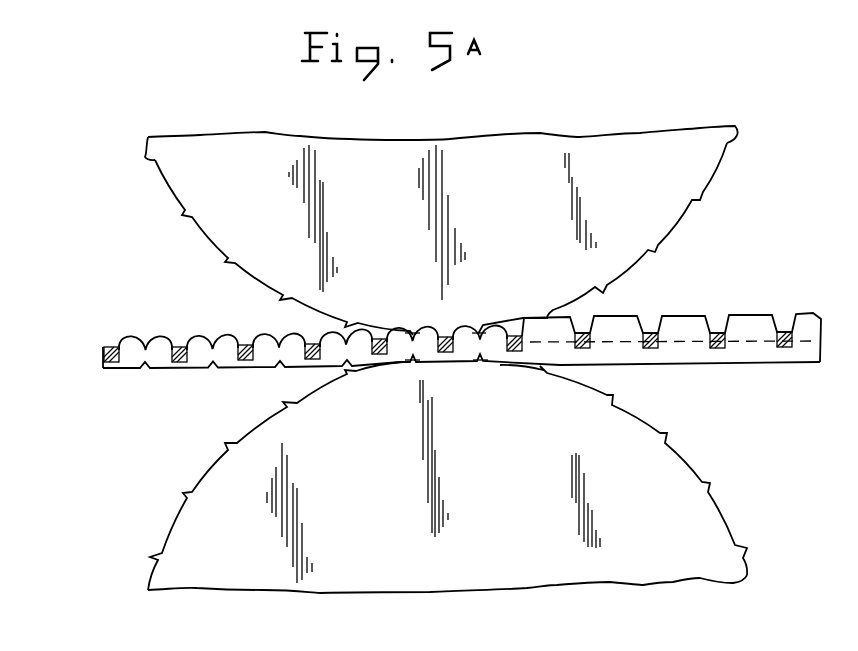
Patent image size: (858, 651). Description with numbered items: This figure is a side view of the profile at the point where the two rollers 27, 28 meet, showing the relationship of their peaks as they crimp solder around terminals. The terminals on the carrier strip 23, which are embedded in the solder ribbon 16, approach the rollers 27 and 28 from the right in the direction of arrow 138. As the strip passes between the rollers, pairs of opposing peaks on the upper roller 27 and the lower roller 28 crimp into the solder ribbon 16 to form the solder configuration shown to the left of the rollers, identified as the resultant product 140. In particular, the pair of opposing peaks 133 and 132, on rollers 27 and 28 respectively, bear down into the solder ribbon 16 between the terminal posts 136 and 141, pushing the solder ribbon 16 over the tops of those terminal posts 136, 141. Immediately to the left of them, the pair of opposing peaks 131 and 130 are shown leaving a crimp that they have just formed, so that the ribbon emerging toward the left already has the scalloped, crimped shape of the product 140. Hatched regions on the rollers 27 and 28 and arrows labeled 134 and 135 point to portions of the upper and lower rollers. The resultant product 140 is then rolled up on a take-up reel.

The roller 27 is at (392, 248).
The roller 28 is at (500, 493).
The solder ribbon 16 is at (763, 355).
The carrier strip 23 is at (686, 343).
The opposing peak 130 is at (413, 358).
The opposing peak 131 is at (413, 332).
The opposing peak 132 is at (482, 358).
The opposing peak 133 is at (479, 330).
The upper die portion 134 is at (658, 158).
The lower die portion 135 is at (600, 455).
The terminal post 136 is at (446, 353).
The arrow 138 is at (692, 284).
The resultant product 140 is at (201, 386).
The terminal post 141 is at (522, 346).